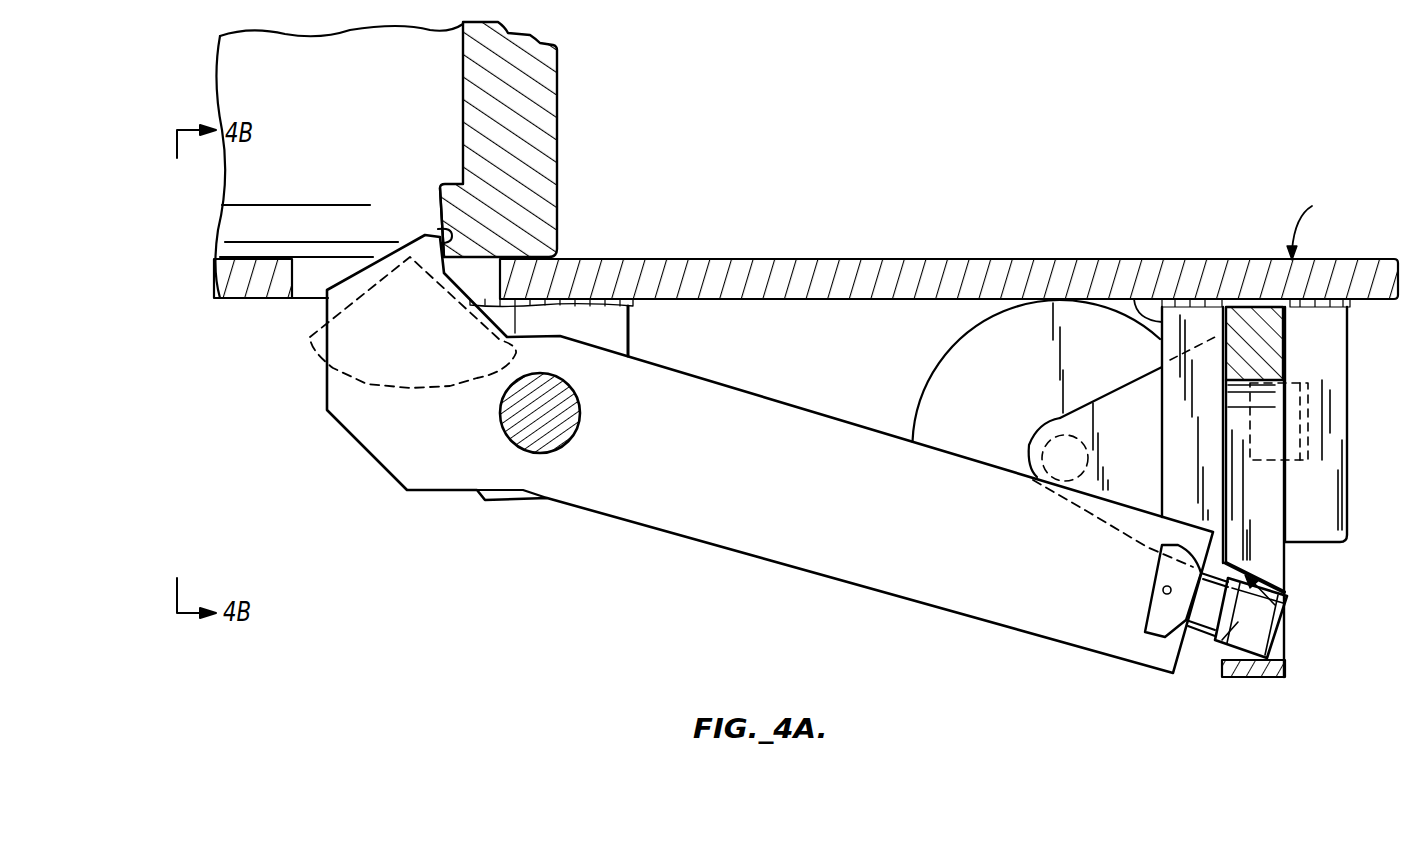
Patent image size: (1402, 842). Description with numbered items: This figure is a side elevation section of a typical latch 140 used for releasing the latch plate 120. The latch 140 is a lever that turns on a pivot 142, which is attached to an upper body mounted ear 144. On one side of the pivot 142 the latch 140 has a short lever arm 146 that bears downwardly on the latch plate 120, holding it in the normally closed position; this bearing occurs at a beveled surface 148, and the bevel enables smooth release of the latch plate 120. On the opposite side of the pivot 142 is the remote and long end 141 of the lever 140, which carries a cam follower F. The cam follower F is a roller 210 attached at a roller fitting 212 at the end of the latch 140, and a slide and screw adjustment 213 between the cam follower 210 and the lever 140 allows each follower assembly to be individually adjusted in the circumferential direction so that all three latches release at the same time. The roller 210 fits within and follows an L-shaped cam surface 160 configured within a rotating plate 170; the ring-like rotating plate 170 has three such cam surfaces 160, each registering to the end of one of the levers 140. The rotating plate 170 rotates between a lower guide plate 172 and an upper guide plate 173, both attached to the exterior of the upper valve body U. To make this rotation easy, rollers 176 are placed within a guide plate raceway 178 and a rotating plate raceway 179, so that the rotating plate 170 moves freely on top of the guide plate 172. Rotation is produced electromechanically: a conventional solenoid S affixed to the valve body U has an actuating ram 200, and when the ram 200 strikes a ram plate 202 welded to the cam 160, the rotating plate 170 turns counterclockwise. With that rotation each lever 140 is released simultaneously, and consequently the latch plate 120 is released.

The latch plate 120 is at (528, 155).
The beveled surface 148 is at (440, 208).
The short lever arm 146 is at (440, 232).
The upper body mounted ear 144 is at (603, 328).
The latch 140 is at (761, 454).
The remote and long end 141 is at (1132, 543).
The pivot 142 is at (547, 440).
The solenoid S is at (1026, 358).
The ram plate 202 is at (1120, 407).
The actuating ram 200 is at (1060, 445).
The upper guide plate 173 is at (1134, 300).
The rollers 176 is at (1263, 420).
The rotating plate 170 is at (1268, 323).
The lower guide plate 172 is at (1327, 365).
The rotating plate raceway 179 is at (1310, 430).
The guide plate raceway 178 is at (1298, 456).
The upper valve body U is at (1308, 225).
The slide and screw adjustment 213 is at (1158, 608).
The roller fitting 212 is at (1212, 613).
The cam surface 160 is at (1283, 610).
The roller 210 is at (1237, 630).
The cam follower F is at (1237, 645).